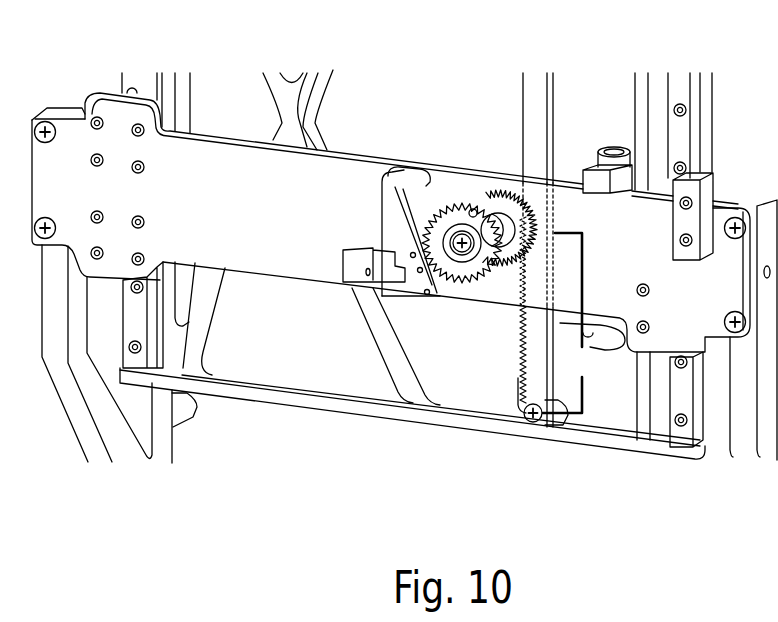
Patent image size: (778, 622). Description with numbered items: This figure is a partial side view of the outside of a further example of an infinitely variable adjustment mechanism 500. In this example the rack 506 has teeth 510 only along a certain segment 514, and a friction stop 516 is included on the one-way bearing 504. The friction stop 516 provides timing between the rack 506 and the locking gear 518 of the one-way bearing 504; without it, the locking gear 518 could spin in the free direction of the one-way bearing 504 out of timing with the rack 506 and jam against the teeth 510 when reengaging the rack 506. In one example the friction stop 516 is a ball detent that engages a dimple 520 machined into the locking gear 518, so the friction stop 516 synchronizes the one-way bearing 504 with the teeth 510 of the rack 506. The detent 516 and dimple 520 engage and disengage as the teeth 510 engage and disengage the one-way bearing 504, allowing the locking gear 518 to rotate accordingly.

The infinitely variable adjustment mechanism 500 is at (428, 90).
The one-way bearing 504 is at (483, 208).
The rack 506 is at (538, 103).
The teeth 510 is at (520, 352).
The segment 514 is at (572, 323).
The friction stop 516 is at (474, 209).
The locking gear 518 is at (463, 275).
The dimple 520 is at (458, 200).